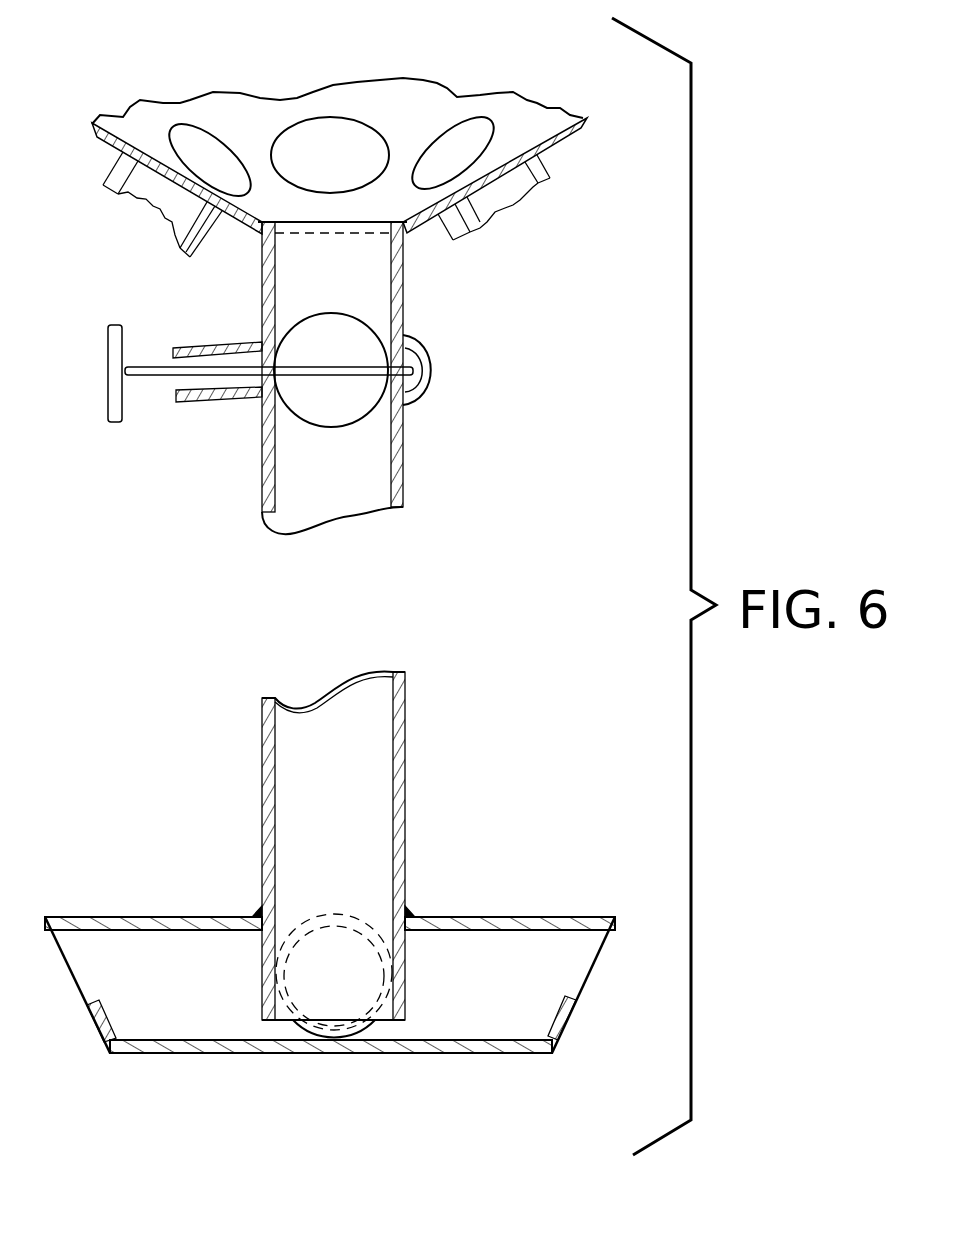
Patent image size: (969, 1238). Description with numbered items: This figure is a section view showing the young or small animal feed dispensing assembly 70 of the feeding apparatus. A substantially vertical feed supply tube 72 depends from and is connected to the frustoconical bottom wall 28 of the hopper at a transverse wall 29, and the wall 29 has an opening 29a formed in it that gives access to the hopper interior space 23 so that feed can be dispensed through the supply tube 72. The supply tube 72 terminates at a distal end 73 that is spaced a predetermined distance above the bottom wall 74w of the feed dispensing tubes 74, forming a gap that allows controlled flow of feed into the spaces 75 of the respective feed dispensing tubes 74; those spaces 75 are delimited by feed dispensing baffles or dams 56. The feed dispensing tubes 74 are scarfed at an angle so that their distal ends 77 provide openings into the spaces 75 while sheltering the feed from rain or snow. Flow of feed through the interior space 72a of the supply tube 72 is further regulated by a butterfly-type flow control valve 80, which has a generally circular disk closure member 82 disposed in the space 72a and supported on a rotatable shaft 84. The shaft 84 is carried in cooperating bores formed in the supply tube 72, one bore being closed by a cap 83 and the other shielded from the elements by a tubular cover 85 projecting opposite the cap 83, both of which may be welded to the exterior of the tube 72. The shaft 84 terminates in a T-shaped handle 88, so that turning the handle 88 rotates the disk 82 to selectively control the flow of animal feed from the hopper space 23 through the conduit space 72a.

The interior space 23 is at (410, 110).
The frustoconical bottom wall 28 is at (94, 134).
The transverse wall 29 is at (410, 240).
The opening 29a is at (279, 215).
The small animal feed dispensing assembly 70 is at (342, 863).
The feed supply tube 72 is at (405, 465).
The interior space 72a is at (366, 769).
The distal end 73 is at (312, 1022).
The feed dispensing tubes 74 is at (337, 913).
The bottom wall 74w is at (462, 1040).
The spaces 75 is at (191, 999).
The distal ends 77 is at (70, 965).
The feed dispensing baffles or dams 56 is at (95, 1030).
The flow control valve 80 is at (293, 384).
The disk closure member 82 is at (325, 407).
The cap 83 is at (434, 372).
The rotatable shaft 84 is at (353, 353).
The tubular cover 85 is at (235, 402).
The T-shaped handle 88 is at (125, 325).